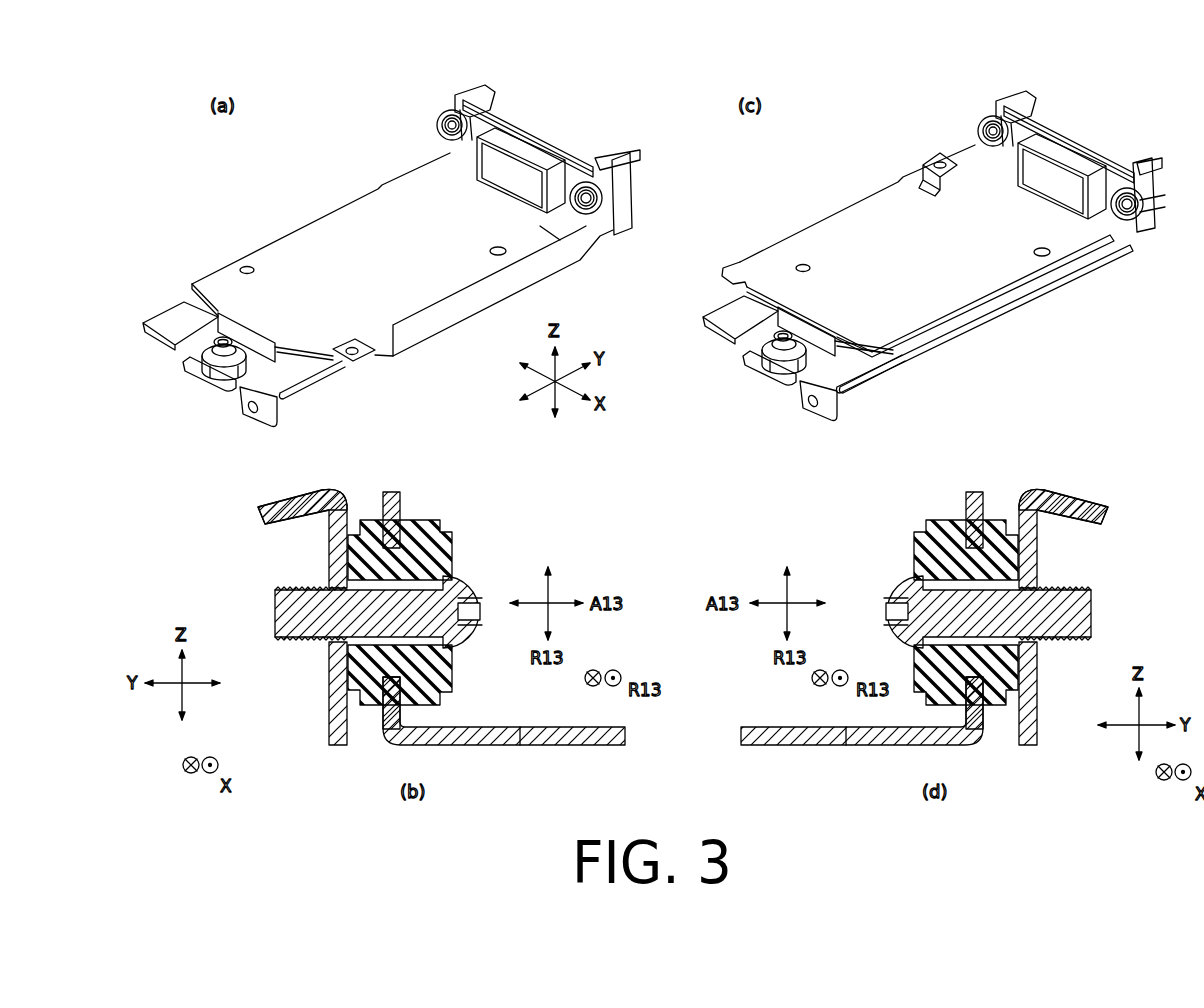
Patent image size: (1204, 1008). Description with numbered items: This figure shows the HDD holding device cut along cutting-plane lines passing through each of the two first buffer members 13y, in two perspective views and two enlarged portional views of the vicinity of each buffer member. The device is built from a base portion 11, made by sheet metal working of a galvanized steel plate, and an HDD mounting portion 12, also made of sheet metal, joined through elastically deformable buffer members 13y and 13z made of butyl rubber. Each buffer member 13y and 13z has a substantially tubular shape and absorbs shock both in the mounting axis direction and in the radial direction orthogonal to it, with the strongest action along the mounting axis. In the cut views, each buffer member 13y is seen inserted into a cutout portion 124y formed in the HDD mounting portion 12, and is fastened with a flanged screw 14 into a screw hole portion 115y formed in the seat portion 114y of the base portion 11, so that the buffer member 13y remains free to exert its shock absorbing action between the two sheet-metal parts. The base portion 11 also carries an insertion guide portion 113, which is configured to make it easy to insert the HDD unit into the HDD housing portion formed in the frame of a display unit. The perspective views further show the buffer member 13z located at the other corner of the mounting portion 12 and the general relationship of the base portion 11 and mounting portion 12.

The base portion 11 is at (310, 378).
The HDD mounting portion 12 is at (312, 232).
The buffer member 13y is at (440, 115).
The buffer member 13z is at (232, 372).
The flanged screw 14 is at (475, 122).
The insertion guide portion 113 is at (262, 503).
The seat portion 114y is at (340, 545).
The screw hole portion 115y is at (322, 638).
The cutout portion 124y is at (382, 498).